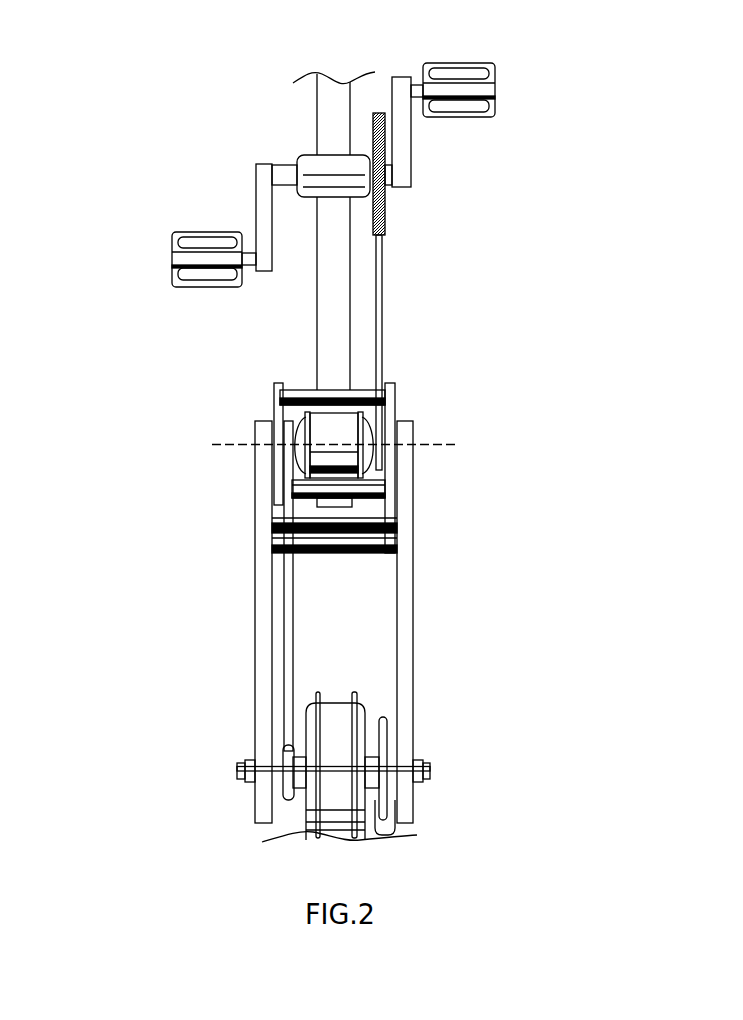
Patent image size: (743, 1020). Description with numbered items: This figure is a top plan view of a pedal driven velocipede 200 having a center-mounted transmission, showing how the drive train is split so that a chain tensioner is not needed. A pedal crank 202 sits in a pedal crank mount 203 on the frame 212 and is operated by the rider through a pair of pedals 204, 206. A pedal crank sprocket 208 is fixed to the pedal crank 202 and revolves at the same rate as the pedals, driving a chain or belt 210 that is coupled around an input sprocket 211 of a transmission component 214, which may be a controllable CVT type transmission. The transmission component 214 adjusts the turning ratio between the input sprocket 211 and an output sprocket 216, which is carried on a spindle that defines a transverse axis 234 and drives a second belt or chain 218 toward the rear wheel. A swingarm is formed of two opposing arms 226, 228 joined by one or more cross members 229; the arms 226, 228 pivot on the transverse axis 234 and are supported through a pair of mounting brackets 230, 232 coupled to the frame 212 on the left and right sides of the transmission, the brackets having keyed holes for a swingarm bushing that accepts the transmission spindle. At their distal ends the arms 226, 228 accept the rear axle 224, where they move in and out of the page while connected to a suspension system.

The pedal driven velocipede 200 is at (707, 32).
The pedal crank 202 is at (240, 187).
The pedal crank mount 203 is at (312, 166).
The pedal 204 is at (172, 256).
The pedal 206 is at (495, 90).
The pedal crank sprocket 208 is at (385, 205).
The chain or belt 210 is at (381, 303).
The input sprocket 211 is at (393, 417).
The frame 212 is at (317, 334).
The transmission component 214 is at (337, 414).
The output sprocket 216 is at (285, 456).
The second belt or chain 218 is at (292, 578).
The rear axle 224 is at (432, 771).
The first swingarm arm 226 is at (256, 675).
The second swingarm arm 228 is at (413, 633).
The cross member 229 is at (358, 553).
The first mounting bracket 230 is at (395, 390).
The second mounting bracket 232 is at (276, 393).
The transverse axis 234 is at (435, 445).